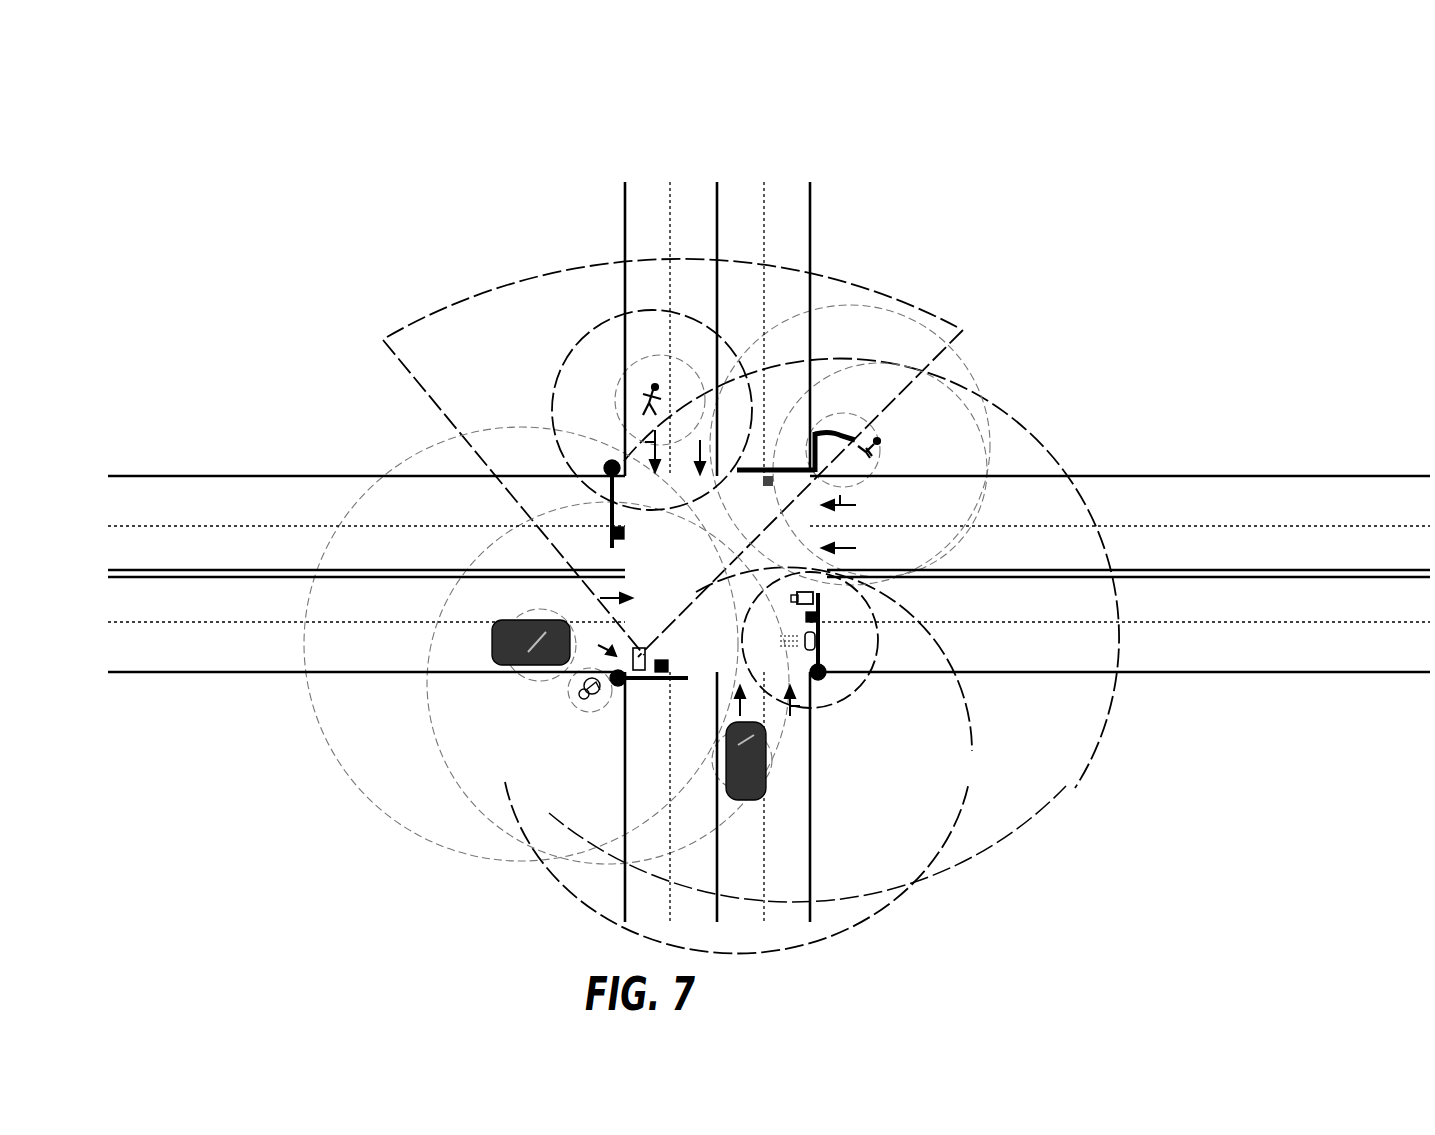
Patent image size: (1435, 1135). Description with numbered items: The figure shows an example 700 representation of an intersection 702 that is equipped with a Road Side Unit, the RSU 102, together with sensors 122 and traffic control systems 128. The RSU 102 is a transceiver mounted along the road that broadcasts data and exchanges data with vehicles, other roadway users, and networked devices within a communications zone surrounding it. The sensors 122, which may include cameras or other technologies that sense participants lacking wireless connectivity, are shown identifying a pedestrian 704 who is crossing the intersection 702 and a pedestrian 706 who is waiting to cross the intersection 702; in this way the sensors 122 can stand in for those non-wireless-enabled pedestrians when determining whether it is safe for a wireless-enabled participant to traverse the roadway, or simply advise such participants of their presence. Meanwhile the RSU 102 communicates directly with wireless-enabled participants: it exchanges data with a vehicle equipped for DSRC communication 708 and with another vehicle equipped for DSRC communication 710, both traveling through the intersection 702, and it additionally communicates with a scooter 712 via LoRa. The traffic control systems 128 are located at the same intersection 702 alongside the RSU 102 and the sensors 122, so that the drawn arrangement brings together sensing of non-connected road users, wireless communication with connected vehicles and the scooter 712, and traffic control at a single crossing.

The example representation 700 is at (245, 115).
The intersection 702 is at (326, 474).
The pedestrian 704 is at (650, 395).
The traffic control systems 128 is at (791, 492).
The pedestrian 706 is at (873, 444).
The vehicle equipped for DSRC communication 708 is at (505, 665).
The vehicle equipped for DSRC communication 710 is at (775, 762).
The scooter 712 is at (584, 691).
The sensors 122 is at (625, 683).
The Road Side Unit (RSU) 102 is at (830, 653).